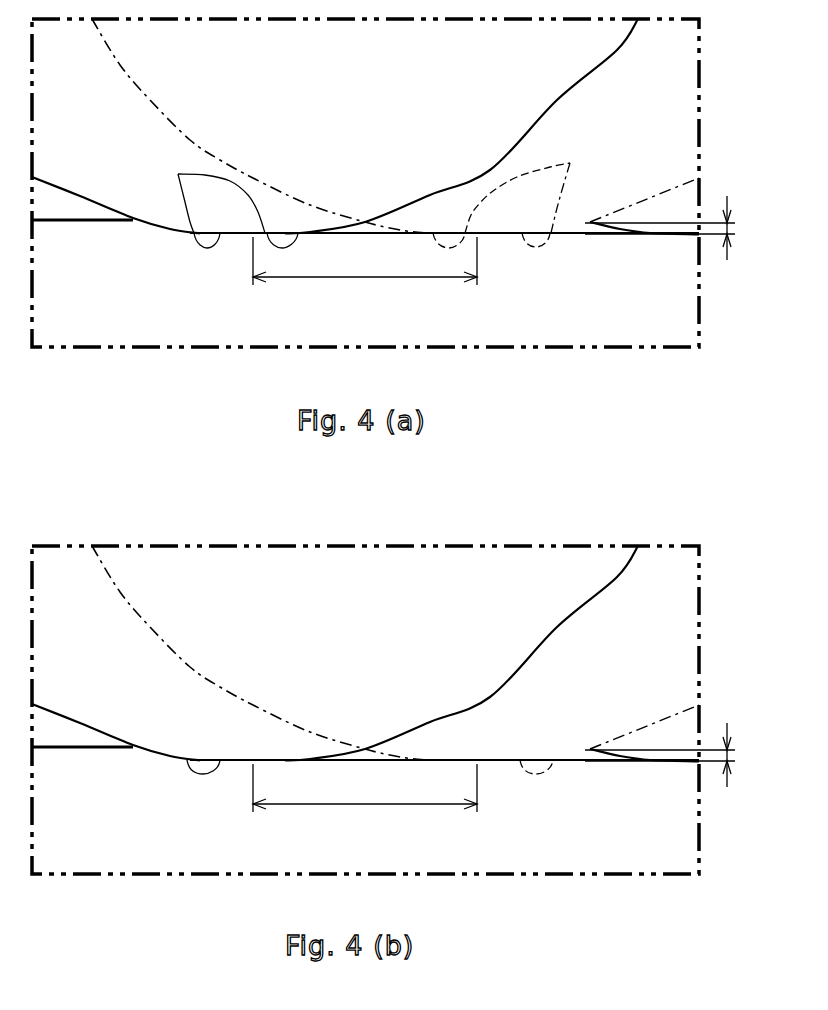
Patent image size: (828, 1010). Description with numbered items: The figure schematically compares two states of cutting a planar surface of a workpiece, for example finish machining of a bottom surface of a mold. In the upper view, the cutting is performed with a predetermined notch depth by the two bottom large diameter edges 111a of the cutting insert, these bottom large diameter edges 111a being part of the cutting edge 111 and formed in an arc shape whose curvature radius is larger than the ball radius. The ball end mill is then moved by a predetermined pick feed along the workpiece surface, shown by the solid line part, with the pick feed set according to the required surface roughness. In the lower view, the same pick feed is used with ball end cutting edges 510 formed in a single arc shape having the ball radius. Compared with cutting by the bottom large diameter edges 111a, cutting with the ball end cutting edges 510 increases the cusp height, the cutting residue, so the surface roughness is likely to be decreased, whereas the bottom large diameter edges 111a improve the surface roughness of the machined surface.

The cutting edge 111 is at (370, 195).
The bottom large diameter edge 111a is at (370, 195).
The ball end cutting edge 510 is at (187, 758).